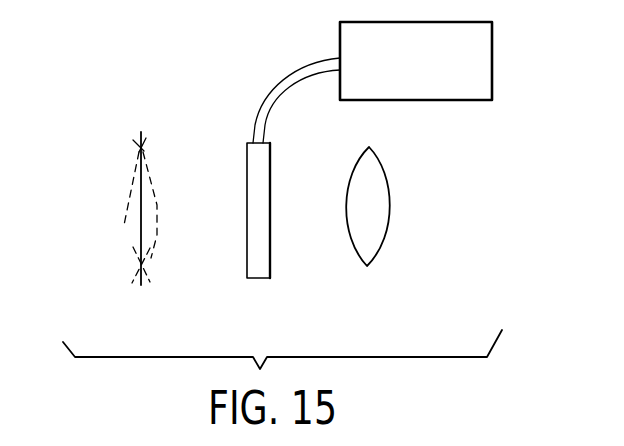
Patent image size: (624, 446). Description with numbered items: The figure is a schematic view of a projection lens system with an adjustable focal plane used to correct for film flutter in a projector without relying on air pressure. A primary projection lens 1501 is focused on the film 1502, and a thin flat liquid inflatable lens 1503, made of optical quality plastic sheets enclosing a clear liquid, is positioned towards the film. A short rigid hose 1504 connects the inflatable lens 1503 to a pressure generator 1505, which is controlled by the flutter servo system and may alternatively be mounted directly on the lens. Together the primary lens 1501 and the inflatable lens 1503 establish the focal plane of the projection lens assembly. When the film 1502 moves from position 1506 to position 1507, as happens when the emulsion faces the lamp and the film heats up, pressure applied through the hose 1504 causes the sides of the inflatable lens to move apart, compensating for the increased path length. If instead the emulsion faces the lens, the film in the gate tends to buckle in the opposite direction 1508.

The primary projection lens 1501 is at (376, 257).
The film 1502 is at (140, 284).
The thin flat liquid inflatable lens 1503 is at (259, 279).
The short rigid hose 1504 is at (283, 78).
The pressure generator 1505 is at (494, 60).
The film position 1506 is at (146, 231).
The film position (direction of film movement) 1507 is at (125, 224).
The buckling direction 1508 is at (157, 205).